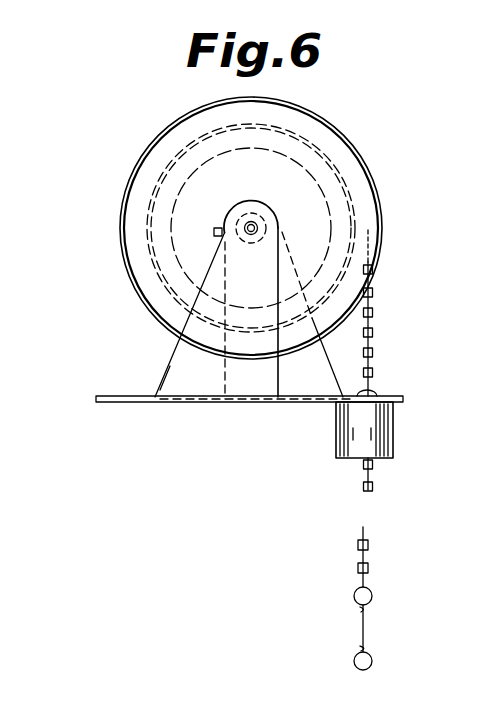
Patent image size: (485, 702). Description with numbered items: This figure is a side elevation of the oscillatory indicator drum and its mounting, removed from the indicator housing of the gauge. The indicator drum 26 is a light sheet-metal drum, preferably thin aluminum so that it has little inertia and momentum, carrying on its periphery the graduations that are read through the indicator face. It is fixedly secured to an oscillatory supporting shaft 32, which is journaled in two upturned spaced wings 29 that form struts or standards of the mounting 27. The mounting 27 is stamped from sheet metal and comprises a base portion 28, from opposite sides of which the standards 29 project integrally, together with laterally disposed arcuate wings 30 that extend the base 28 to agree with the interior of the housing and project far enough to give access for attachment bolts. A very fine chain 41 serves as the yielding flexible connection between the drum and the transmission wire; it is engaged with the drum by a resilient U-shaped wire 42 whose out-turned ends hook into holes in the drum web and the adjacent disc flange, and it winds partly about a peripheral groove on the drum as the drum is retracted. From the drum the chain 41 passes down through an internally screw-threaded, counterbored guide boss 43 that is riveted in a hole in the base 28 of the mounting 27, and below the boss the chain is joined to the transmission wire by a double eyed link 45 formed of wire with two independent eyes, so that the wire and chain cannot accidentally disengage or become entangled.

The indicator drum 26 is at (382, 210).
The mounting 27 is at (249, 312).
The base portion 28 is at (300, 404).
The upturned spaced wings 29 is at (173, 353).
The arcuate wings 30 is at (388, 396).
The oscillatory supporting shaft 32 is at (266, 227).
The chain 41 is at (373, 332).
The U-shaped wire 42 is at (383, 247).
The guide boss 43 is at (395, 434).
The double eyed link 45 is at (371, 636).